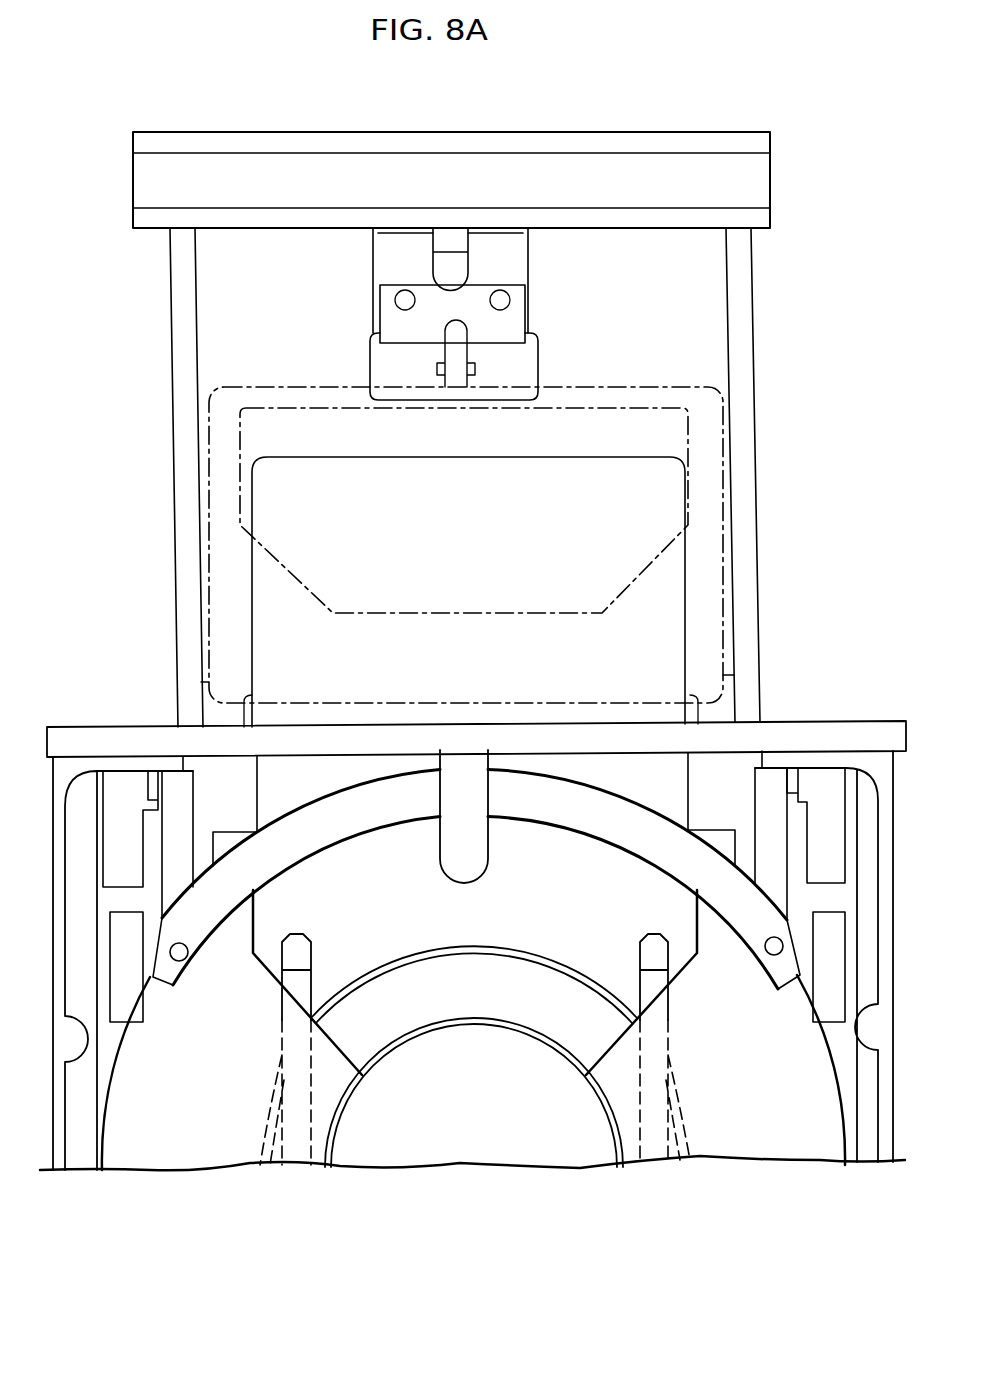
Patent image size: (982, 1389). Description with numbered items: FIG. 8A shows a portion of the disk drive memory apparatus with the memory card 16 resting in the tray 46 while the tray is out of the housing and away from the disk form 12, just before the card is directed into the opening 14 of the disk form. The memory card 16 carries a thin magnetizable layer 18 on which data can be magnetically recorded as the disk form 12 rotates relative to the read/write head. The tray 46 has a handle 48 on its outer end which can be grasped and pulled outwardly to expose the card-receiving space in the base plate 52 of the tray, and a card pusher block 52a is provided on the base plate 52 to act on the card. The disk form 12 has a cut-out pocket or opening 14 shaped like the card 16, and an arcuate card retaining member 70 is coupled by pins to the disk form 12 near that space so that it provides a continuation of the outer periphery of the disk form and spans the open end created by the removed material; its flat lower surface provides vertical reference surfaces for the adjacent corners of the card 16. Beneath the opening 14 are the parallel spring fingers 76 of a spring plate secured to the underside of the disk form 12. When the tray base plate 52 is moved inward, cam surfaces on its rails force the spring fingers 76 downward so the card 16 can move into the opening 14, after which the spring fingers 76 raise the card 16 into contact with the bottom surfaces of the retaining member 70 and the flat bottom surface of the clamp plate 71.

The disk form 12 is at (108, 1049).
The opening 14 is at (255, 903).
The memory card 16 is at (196, 618).
The magnetizable layer 18 is at (670, 420).
The tray 46 is at (447, 400).
The handle 48 is at (398, 142).
The base plate 52 is at (306, 311).
The card pusher block 52a is at (531, 365).
The arcuate card retaining member 70 is at (577, 810).
The clamp plate 71 is at (495, 967).
The spring fingers 76 is at (315, 953).